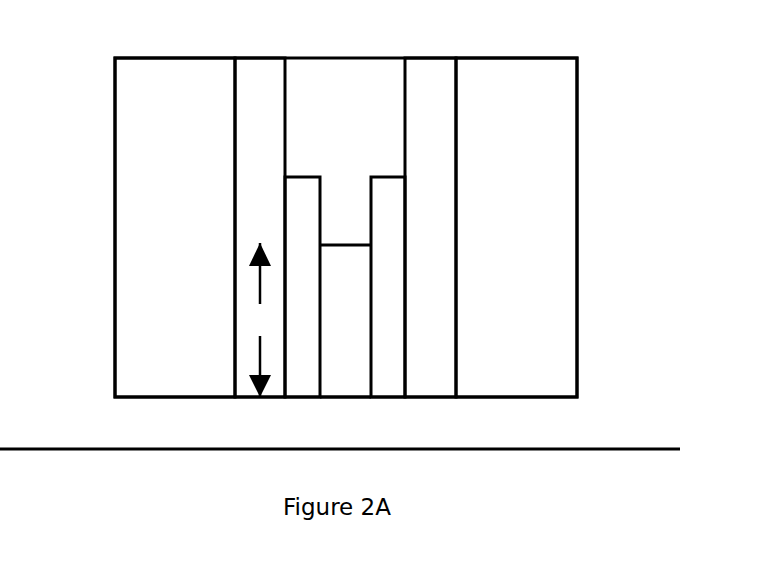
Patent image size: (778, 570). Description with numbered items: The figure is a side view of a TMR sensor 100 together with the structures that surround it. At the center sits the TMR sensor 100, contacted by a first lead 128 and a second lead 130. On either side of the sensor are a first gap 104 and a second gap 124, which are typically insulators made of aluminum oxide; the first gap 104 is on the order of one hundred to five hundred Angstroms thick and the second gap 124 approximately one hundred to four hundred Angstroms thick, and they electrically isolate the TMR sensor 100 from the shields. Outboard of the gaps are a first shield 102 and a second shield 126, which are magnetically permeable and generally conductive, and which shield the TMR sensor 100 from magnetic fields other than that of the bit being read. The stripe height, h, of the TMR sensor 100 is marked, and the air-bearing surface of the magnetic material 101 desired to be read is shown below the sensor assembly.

The TMR sensor 100 is at (343, 397).
The magnetic material 101 is at (575, 449).
The first shield 102 is at (115, 145).
The first gap 104 is at (257, 397).
The second gap 124 is at (437, 397).
The second shield 126 is at (577, 112).
The first lead 128 is at (303, 177).
The second lead 130 is at (390, 177).